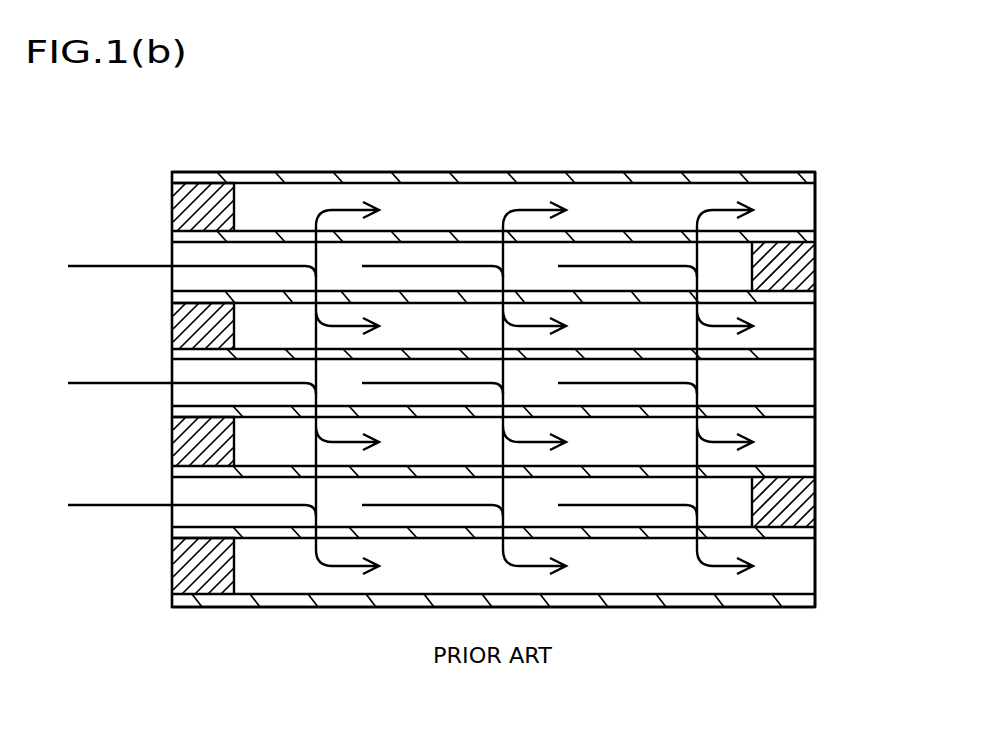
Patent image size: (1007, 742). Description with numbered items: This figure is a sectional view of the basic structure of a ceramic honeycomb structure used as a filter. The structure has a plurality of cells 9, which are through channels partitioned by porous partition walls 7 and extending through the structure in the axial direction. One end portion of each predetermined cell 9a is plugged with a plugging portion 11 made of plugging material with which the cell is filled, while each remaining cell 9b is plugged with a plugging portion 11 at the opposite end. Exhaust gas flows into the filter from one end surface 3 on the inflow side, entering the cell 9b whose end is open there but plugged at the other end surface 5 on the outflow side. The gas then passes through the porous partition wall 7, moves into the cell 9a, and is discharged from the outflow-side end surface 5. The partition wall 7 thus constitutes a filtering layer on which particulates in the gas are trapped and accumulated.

The end surface 3 is at (173, 400).
The end surface 5 is at (815, 438).
The porous partition wall 7 is at (595, 240).
The cell 9 is at (482, 97).
The predetermined cell 9a is at (413, 210).
The remaining cell 9b is at (480, 262).
The plugging portion 11 is at (187, 322).